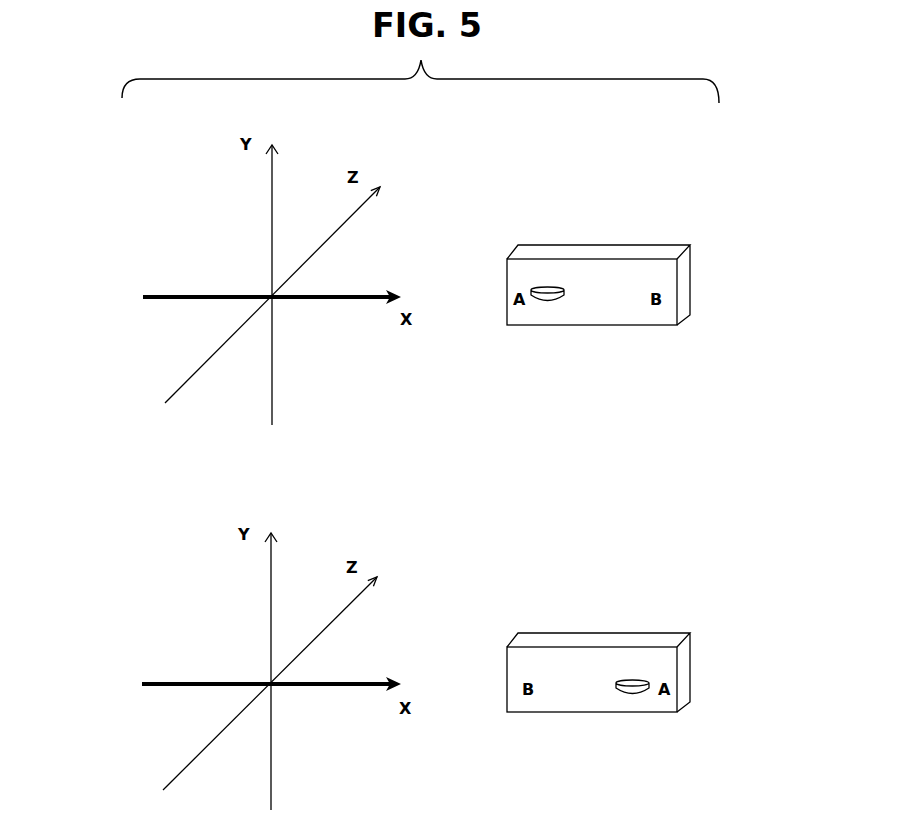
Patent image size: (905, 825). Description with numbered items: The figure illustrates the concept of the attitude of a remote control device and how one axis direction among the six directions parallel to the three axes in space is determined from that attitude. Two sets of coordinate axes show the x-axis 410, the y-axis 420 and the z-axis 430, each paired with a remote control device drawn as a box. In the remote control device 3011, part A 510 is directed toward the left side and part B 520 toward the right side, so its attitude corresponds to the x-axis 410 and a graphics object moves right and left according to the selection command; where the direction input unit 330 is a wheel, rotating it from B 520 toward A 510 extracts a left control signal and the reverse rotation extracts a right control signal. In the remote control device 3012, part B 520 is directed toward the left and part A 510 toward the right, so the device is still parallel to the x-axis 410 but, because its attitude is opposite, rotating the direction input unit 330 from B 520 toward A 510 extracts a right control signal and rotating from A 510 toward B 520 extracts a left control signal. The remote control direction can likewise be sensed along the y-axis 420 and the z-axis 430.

The x-axis 410 is at (357, 293).
The y-axis 420 is at (272, 243).
The z-axis 430 is at (187, 378).
The direction input unit 330 is at (538, 287).
The remote control device 3011 is at (665, 252).
The remote control device 3012 is at (663, 642).
The part A 510 is at (513, 310).
The part B 520 is at (655, 313).